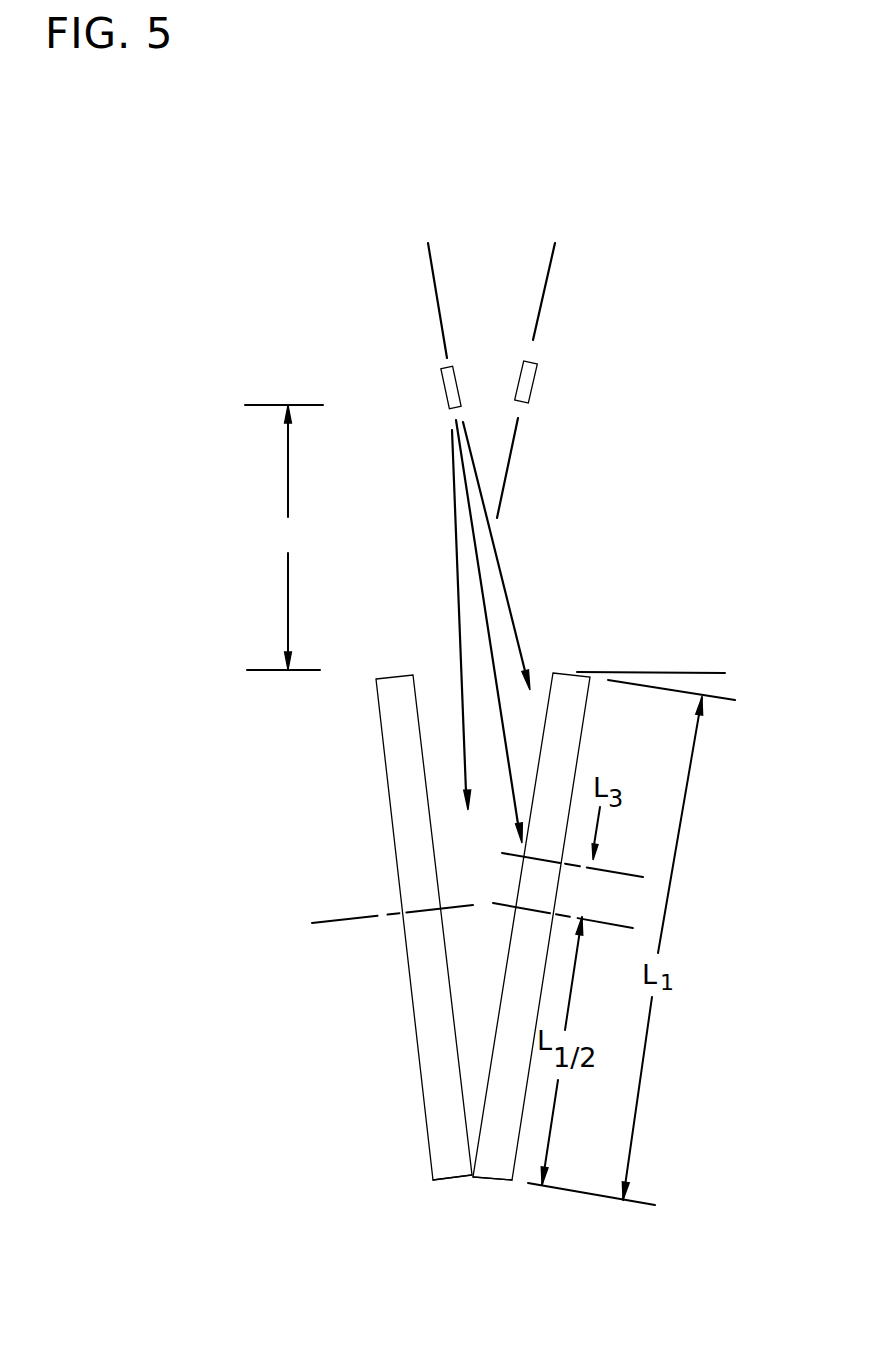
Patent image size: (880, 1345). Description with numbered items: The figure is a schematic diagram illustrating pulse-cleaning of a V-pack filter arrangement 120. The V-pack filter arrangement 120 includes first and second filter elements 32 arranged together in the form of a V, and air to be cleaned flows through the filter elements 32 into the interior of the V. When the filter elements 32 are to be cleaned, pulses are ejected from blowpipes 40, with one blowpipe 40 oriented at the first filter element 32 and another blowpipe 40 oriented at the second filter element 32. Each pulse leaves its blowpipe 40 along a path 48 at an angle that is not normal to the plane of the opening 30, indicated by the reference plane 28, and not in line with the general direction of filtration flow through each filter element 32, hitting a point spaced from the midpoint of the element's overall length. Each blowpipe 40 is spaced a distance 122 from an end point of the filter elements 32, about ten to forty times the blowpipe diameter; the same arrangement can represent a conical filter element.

The upper surface plane 28 is at (677, 672).
The opening 30 is at (545, 670).
The filter element 32 is at (447, 1167).
The blowpipe 40 is at (443, 387).
The light beams 48 is at (435, 302).
The V-pack filter arrangement 120 is at (292, 773).
The distance 122 is at (284, 537).